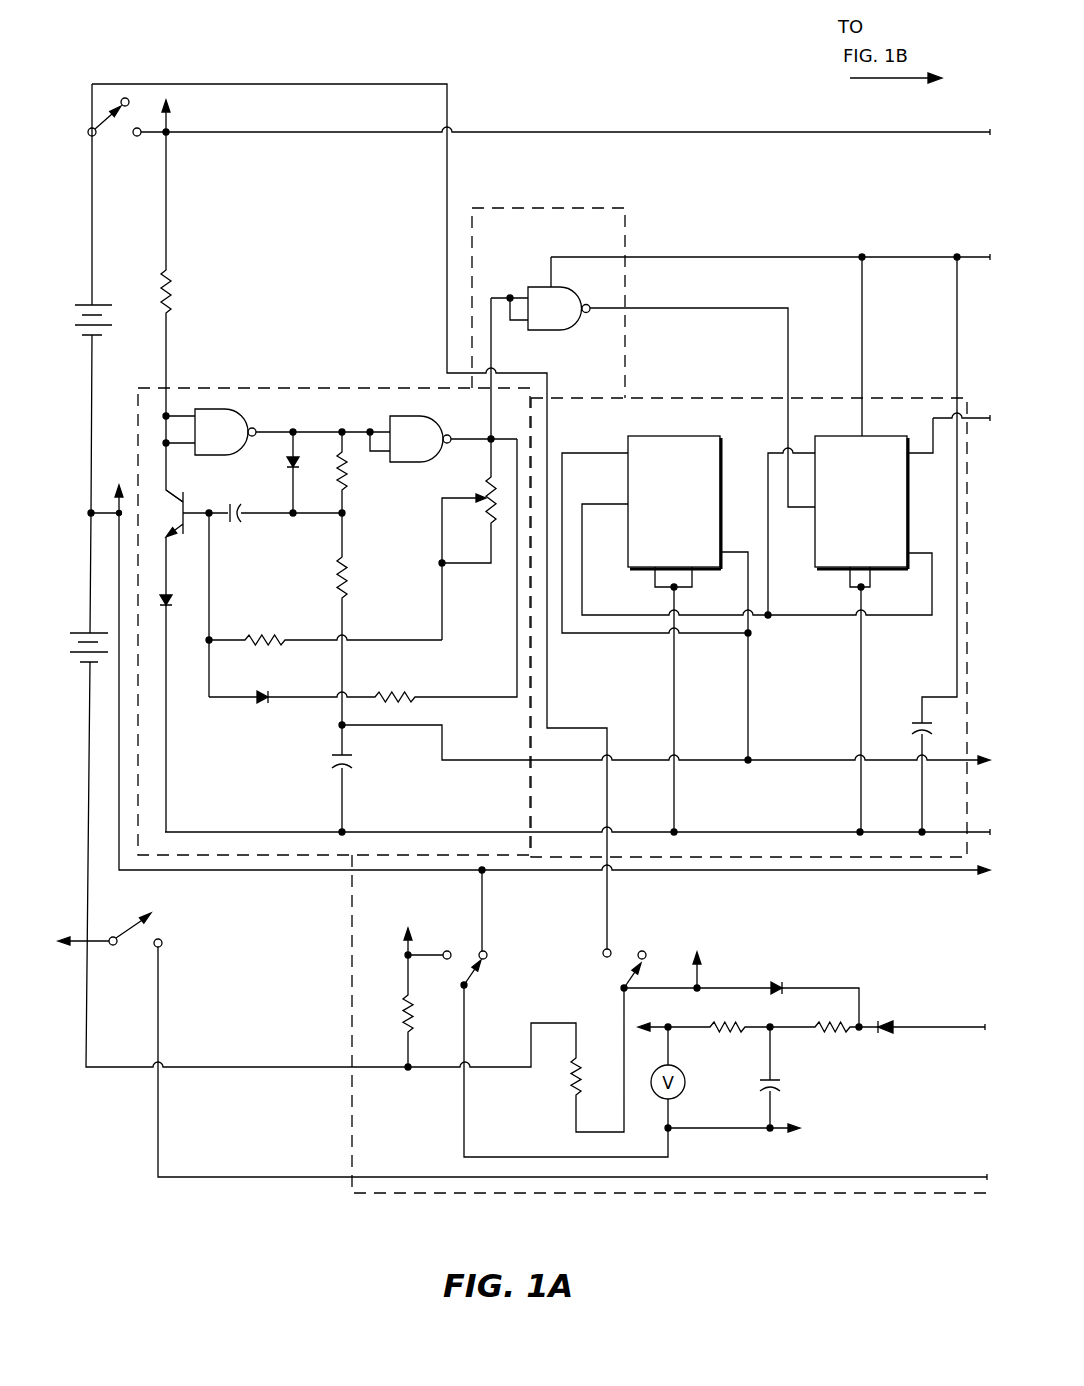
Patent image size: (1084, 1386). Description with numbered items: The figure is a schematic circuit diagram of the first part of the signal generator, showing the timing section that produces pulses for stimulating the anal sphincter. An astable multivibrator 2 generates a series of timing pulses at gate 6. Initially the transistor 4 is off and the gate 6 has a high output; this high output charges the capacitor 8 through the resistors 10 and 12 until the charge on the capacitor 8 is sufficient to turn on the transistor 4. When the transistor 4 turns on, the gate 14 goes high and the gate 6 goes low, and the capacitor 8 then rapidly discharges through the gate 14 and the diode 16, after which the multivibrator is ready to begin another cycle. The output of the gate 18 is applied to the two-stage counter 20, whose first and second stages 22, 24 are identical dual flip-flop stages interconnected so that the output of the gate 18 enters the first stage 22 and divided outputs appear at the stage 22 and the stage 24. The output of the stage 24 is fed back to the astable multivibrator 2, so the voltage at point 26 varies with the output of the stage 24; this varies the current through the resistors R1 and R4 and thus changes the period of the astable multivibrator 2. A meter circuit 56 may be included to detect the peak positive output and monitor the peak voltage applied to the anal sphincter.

The astable multivibrator 2 is at (335, 387).
The transistor 4 is at (184, 500).
The gate 6 is at (443, 427).
The capacitor 8 is at (240, 513).
The resistor 10 is at (489, 514).
The resistor 12 is at (270, 635).
The gate 14 is at (248, 417).
The diode 16 is at (300, 464).
The gate 18 is at (579, 292).
The two-stage counter 20 is at (803, 398).
The first stage 22 is at (846, 436).
The second stage 24 is at (702, 436).
The point 26 is at (337, 726).
The meter circuit 56 is at (953, 951).
The resistor R1 is at (355, 482).
The resistor R4 is at (355, 577).